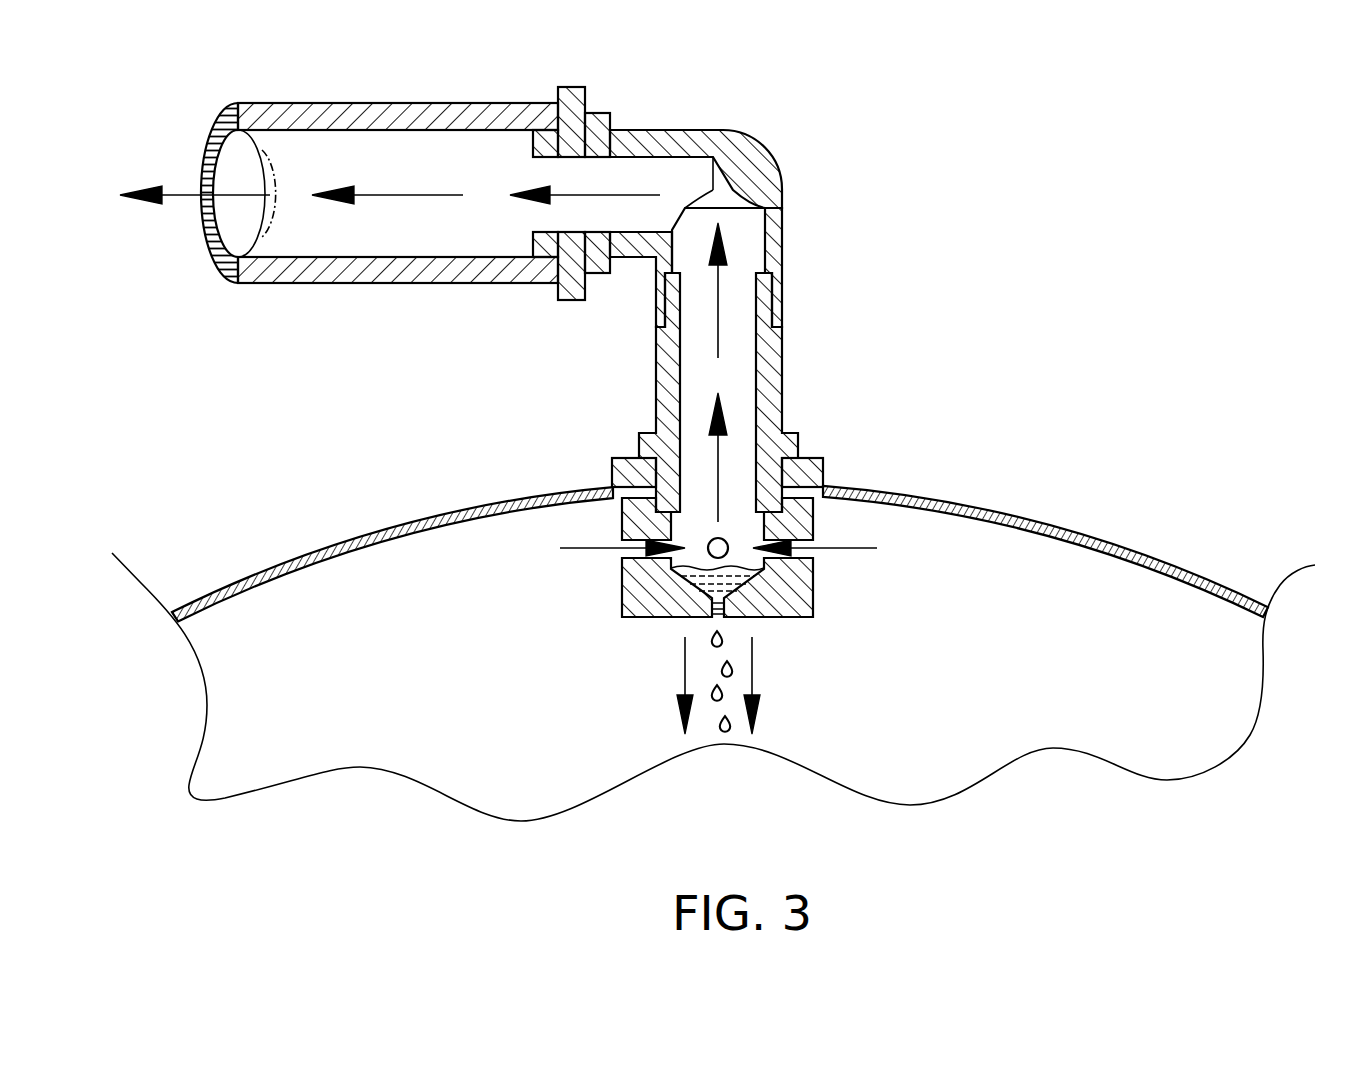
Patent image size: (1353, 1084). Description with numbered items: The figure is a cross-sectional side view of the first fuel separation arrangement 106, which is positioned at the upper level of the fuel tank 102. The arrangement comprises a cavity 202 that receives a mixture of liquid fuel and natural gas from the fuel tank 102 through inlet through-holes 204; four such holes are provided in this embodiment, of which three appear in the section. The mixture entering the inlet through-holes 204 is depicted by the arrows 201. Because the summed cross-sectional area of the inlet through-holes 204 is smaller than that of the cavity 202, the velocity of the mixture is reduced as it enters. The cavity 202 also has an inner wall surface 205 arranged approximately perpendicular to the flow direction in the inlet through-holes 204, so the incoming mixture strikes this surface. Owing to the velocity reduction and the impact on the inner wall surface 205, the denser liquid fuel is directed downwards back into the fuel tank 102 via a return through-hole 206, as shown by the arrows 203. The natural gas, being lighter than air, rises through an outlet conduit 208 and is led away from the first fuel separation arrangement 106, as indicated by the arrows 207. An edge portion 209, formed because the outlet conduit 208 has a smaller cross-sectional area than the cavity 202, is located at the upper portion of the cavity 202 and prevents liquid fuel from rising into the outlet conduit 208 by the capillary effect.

The fuel tank 102 is at (975, 497).
The first fuel separation arrangement 106 is at (591, 481).
The arrows 201 is at (622, 540).
The cavity 202 is at (815, 585).
The arrows 203 is at (684, 667).
The inlet through-holes 204 is at (733, 545).
The inner wall surface 205 is at (717, 551).
The return through-hole 206 is at (725, 598).
The arrows 207 is at (735, 244).
The outlet conduit 208 is at (715, 373).
The edge portion 209 is at (695, 515).